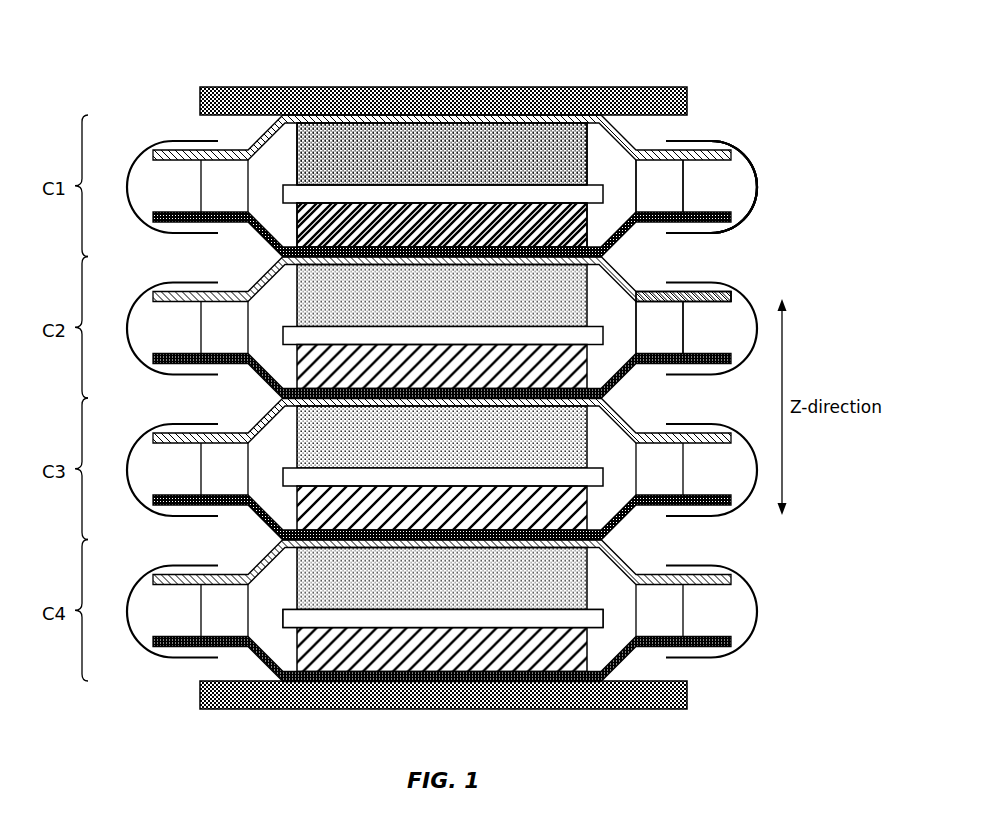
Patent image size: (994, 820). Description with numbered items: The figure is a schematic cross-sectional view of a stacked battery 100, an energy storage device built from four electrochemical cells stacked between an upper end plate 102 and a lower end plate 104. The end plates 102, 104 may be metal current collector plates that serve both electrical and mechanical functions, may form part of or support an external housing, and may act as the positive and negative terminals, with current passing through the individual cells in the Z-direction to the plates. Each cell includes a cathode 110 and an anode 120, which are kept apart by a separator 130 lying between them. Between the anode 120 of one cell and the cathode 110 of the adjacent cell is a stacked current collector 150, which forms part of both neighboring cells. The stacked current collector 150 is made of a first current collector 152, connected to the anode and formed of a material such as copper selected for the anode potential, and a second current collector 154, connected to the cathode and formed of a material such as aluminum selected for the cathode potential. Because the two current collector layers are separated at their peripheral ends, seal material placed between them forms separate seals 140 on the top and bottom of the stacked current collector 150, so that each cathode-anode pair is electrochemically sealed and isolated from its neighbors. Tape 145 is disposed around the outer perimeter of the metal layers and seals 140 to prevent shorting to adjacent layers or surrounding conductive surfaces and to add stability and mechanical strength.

The stacked battery 100 is at (462, 387).
The end plate 102 is at (565, 87).
The end plate 104 is at (312, 709).
The cathode 110 is at (295, 145).
The anode 120 is at (295, 210).
The separator 130 is at (282, 615).
The seal 140 is at (687, 194).
The tape 145 is at (718, 141).
The stacked current collector 150 is at (812, 158).
The first current collector 152 is at (759, 187).
The second current collector 154 is at (737, 291).